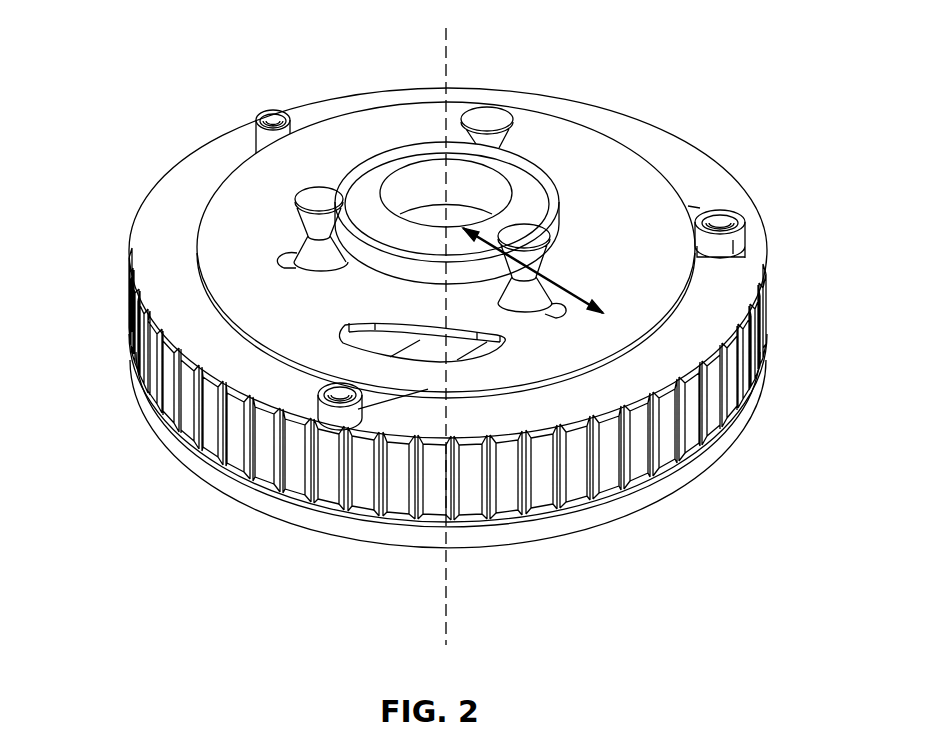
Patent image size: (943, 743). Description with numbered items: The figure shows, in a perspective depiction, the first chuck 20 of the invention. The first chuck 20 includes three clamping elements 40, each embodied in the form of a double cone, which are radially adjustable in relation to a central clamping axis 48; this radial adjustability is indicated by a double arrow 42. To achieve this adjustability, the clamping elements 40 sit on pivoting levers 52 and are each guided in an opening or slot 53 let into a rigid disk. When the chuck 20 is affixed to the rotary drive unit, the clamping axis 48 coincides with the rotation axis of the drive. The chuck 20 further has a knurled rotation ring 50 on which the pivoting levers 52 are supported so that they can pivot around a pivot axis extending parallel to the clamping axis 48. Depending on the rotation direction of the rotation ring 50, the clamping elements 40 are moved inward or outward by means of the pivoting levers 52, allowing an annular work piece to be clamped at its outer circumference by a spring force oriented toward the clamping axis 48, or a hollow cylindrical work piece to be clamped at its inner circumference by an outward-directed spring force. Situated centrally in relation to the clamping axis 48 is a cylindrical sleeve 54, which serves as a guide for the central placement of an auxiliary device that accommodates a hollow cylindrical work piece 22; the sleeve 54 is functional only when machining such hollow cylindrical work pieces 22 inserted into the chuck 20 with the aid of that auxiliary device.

The first chuck 20 is at (125, 62).
The hollow cylindrical work piece 22 is at (550, 203).
The clamping elements 40 is at (308, 195).
The double arrow 42 is at (580, 300).
The clamping axis 48 is at (442, 595).
The knurled rotation ring 50 is at (580, 493).
The pivoting levers 52 is at (256, 147).
The slot 53 is at (277, 262).
The cylindrical sleeve 54 is at (388, 228).